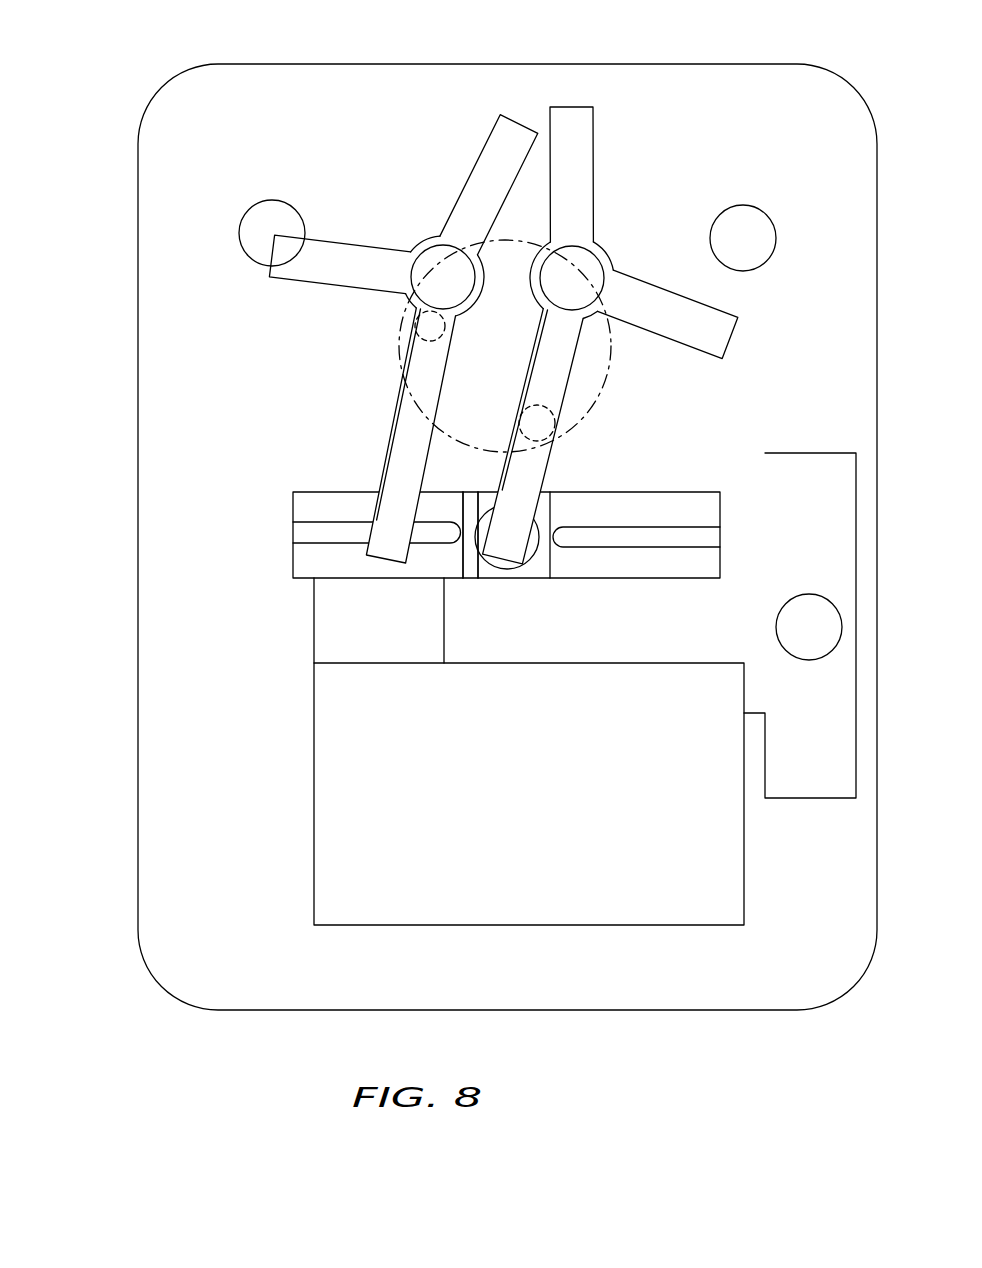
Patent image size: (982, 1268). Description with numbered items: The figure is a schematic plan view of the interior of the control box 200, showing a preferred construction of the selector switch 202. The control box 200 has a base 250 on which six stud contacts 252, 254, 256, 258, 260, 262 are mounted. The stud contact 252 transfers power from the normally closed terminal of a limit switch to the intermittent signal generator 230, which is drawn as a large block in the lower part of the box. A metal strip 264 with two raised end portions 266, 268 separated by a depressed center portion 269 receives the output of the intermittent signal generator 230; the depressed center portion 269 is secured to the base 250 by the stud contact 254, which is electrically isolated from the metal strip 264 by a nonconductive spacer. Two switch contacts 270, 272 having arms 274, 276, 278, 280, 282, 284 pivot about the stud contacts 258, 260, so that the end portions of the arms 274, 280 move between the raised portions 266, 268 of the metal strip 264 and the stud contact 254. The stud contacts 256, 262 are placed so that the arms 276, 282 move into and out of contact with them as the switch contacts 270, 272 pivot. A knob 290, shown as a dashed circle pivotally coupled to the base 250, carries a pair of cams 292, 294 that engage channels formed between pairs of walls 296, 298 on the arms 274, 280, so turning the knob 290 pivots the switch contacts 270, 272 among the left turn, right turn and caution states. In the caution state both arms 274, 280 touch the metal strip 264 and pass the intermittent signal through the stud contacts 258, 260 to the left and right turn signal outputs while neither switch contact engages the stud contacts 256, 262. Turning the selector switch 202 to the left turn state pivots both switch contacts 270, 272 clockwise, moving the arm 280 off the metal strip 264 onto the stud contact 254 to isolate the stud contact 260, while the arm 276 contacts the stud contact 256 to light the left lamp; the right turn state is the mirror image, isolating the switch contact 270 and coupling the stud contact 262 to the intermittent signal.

The control box 200 is at (165, 898).
The selector switch 202 is at (538, 290).
The intermittent signal generator 230 is at (345, 793).
The base 250 is at (526, 536).
The stud contact 252 is at (787, 637).
The stud contact 254 is at (480, 542).
The stud contact 256 is at (270, 215).
The stud contact 258 is at (427, 263).
The stud contact 260 is at (593, 273).
The stud contact 262 is at (737, 217).
The metal strip 264 is at (300, 512).
The raised end portion 266 is at (322, 538).
The raised end portion 268 is at (613, 543).
The depressed center portion 269 is at (485, 483).
The switch contact 270 is at (476, 190).
The switch contact 272 is at (580, 227).
The arm 274 is at (384, 435).
The arm 276 is at (352, 252).
The arm 278 is at (498, 152).
The arm 280 is at (579, 436).
The arm 282 is at (713, 318).
The arm 284 is at (582, 142).
The knob 290 is at (457, 378).
The cam 292 is at (414, 327).
The cam 294 is at (556, 418).
The walls 296 is at (392, 415).
The walls 298 is at (570, 388).